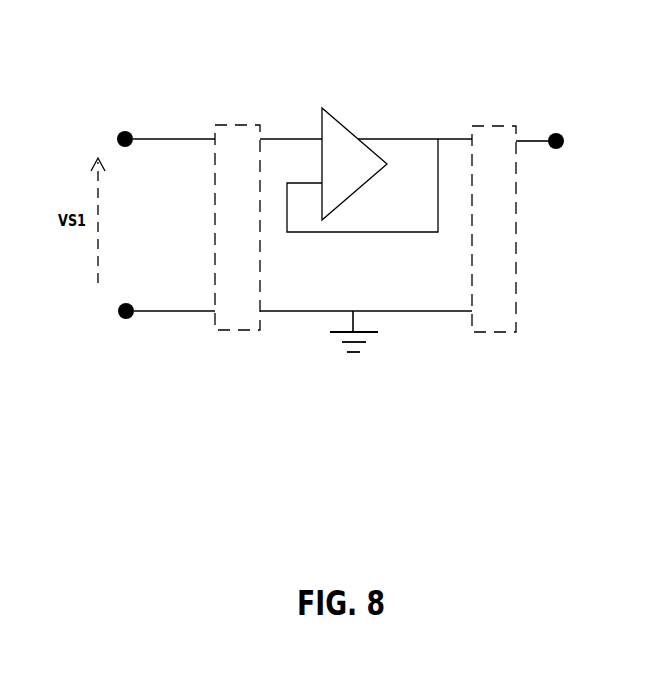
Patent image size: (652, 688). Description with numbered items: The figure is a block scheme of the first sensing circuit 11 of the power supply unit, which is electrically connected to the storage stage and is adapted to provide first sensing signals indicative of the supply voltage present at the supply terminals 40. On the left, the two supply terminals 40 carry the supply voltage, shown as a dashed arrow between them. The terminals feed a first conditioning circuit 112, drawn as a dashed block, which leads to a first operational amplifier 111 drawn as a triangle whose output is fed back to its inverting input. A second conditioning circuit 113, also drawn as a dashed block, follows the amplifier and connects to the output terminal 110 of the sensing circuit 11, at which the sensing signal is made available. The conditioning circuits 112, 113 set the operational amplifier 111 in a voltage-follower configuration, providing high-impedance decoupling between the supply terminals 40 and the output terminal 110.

The first sensing circuit 11 is at (356, 423).
The supply terminals 40 is at (129, 332).
The output terminal 110 is at (568, 173).
The first operational amplifier 111 is at (317, 101).
The first conditioning circuit 112 is at (210, 228).
The first conditioning circuit 113 is at (470, 246).